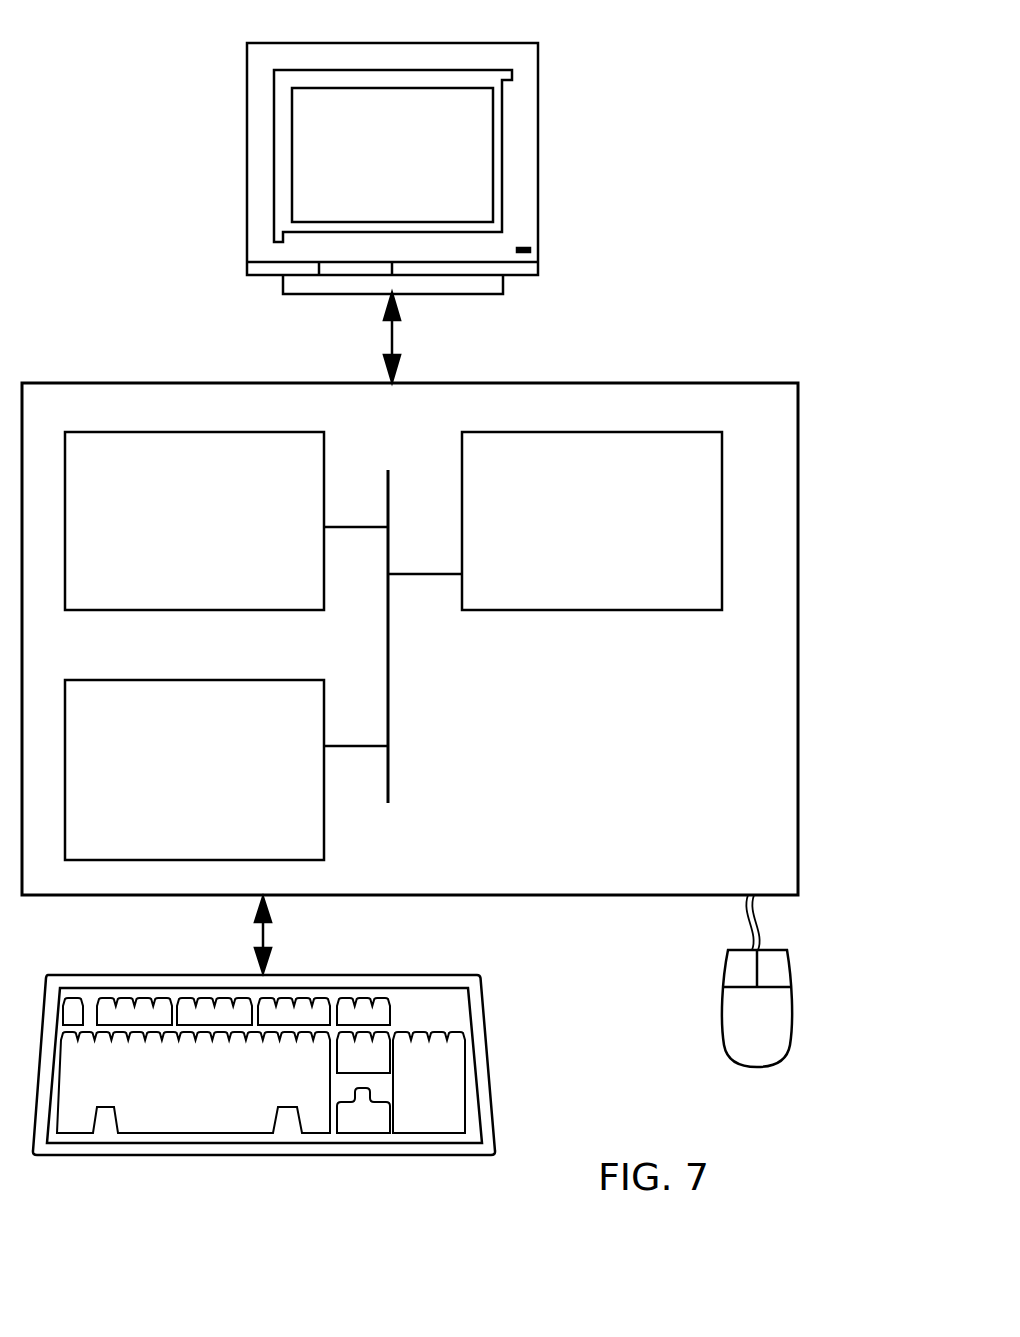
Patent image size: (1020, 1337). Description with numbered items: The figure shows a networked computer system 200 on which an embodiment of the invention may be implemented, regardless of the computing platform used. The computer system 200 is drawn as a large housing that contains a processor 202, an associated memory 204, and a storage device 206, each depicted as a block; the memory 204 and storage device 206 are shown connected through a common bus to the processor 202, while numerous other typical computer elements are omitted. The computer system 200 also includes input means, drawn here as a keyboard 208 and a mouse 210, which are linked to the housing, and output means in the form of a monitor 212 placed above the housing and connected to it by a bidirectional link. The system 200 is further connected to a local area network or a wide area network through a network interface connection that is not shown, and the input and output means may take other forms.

The networked computer system 200 is at (820, 217).
The processor 202 is at (636, 532).
The memory 204 is at (218, 532).
The storage device 206 is at (214, 784).
The keyboard 208 is at (209, 1109).
The mouse 210 is at (779, 1031).
The monitor 212 is at (414, 171).